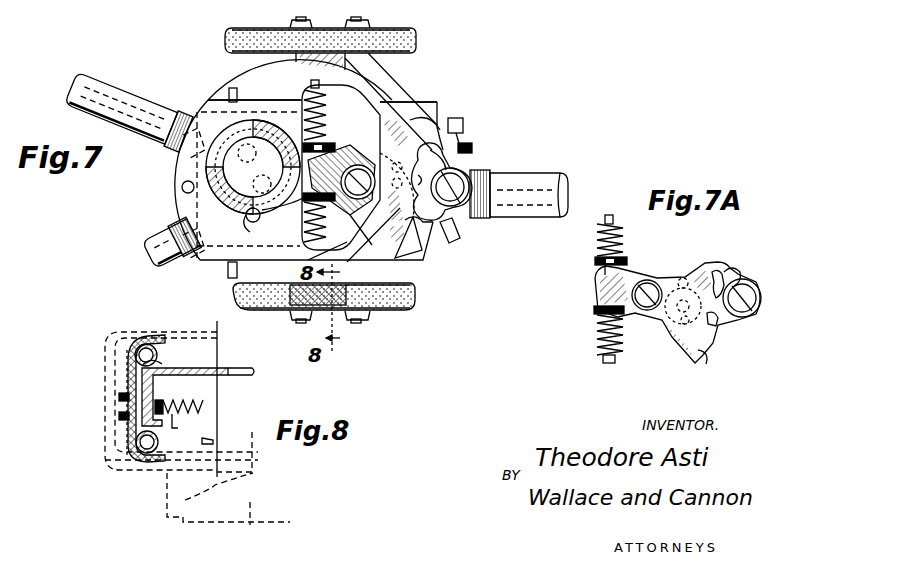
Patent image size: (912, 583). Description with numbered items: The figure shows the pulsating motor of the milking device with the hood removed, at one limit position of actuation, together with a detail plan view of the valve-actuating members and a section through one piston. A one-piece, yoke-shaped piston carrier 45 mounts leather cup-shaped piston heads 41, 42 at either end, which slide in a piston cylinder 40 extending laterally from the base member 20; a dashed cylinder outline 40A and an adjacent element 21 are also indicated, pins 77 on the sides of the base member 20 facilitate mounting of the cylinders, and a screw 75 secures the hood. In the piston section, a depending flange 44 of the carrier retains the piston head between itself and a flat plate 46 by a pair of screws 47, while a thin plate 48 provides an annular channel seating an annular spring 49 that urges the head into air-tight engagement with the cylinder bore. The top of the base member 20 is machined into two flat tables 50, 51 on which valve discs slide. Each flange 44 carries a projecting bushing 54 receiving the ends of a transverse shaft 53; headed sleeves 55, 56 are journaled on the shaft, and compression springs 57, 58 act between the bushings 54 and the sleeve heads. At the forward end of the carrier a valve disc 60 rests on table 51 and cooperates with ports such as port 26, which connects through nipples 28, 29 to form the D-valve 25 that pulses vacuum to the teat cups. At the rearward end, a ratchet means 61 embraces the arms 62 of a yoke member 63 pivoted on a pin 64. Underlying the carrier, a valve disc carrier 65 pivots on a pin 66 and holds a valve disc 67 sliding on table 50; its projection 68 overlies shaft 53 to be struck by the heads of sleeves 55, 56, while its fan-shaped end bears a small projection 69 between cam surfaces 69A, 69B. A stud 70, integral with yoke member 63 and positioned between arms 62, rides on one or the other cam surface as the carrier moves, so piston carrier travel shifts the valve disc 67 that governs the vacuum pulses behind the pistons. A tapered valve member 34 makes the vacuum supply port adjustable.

In FIG. 8, the base member 20 is at (252, 526).
In FIG. 7, the tube 21 is at (555, 178).
In FIG. 7, the valve 25 is at (205, 165).
In FIG. 7, the port 26 is at (254, 222).
In FIG. 7, the elongated nipple 28 is at (150, 247).
In FIG. 7, the elongated nipple 29 is at (90, 75).
In FIG. 7, the tapered valve member 34 is at (463, 122).
In FIG. 8, the piston cylinder 40 is at (177, 472).
In FIG. 8, the frame outline 40A is at (105, 350).
In FIG. 7, the piston head 41 is at (412, 302).
In FIG. 8, the piston head 41 is at (140, 340).
In FIG. 7, the piston head 42 is at (415, 44).
In FIG. 8, the depending flange 44 is at (142, 372).
In FIG. 7, the piston carrier 45 is at (347, 85).
In FIG. 8, the piston carrier 45 is at (222, 368).
In FIG. 7, the flat plate 46 is at (240, 33).
In FIG. 8, the flat plate 46 is at (130, 430).
In FIG. 7, the screws 47 is at (292, 22).
In FIG. 8, the screws 47 is at (119, 397).
In FIG. 7, the thin plate 48 is at (295, 287).
In FIG. 8, the thin plate 48 is at (158, 355).
In FIG. 7, the annular spring 49 is at (352, 285).
In FIG. 8, the annular spring 49 is at (145, 452).
In FIG. 7, the flat table 50 is at (425, 110).
In FIG. 7, the flat table 51 is at (205, 115).
In FIG. 7A, the shaft 53 is at (603, 360).
In FIG. 8, the shaft 53 is at (205, 404).
In FIG. 8, the projecting bushing 54 is at (165, 400).
In FIG. 7, the headed sleeve 55 is at (262, 210).
In FIG. 7A, the headed sleeve 55 is at (594, 310).
In FIG. 7, the headed sleeve 56 is at (336, 145).
In FIG. 7A, the headed sleeve 56 is at (628, 261).
In FIG. 7, the compression spring 57 is at (328, 210).
In FIG. 7A, the compression spring 57 is at (600, 340).
In FIG. 8, the compression spring 57 is at (175, 422).
In FIG. 7, the compression spring 58 is at (328, 105).
In FIG. 7A, the compression spring 58 is at (624, 242).
In FIG. 7, the valve disc 60 is at (230, 175).
In FIG. 7, the ratchet means 61 is at (425, 125).
In FIG. 7, the arms 62 is at (455, 165).
In FIG. 7A, the arms 62 is at (716, 270).
In FIG. 7, the yoke member 63 is at (469, 178).
In FIG. 7A, the yoke member 63 is at (759, 306).
In FIG. 7, the pin 64 is at (464, 190).
In FIG. 7A, the pin 64 is at (744, 311).
In FIG. 7A, the valve disc carrier 65 is at (680, 350).
In FIG. 7, the pin 66 is at (366, 232).
In FIG. 7A, the pin 66 is at (650, 305).
In FIG. 7, the valve disc 67 is at (422, 228).
In FIG. 7, the projection 68 is at (342, 162).
In FIG. 7A, the small projection 69 is at (712, 325).
In FIG. 7A, the cam surface 69A is at (736, 270).
In FIG. 7, the cam surface 69B is at (410, 250).
In FIG. 7A, the cam surface 69B is at (704, 356).
In FIG. 7A, the projecting stud 70 is at (710, 268).
In FIG. 7, the screw 75 is at (460, 236).
In FIG. 7, the pin 77 is at (232, 88).
In FIG. 8, the pin 77 is at (212, 440).